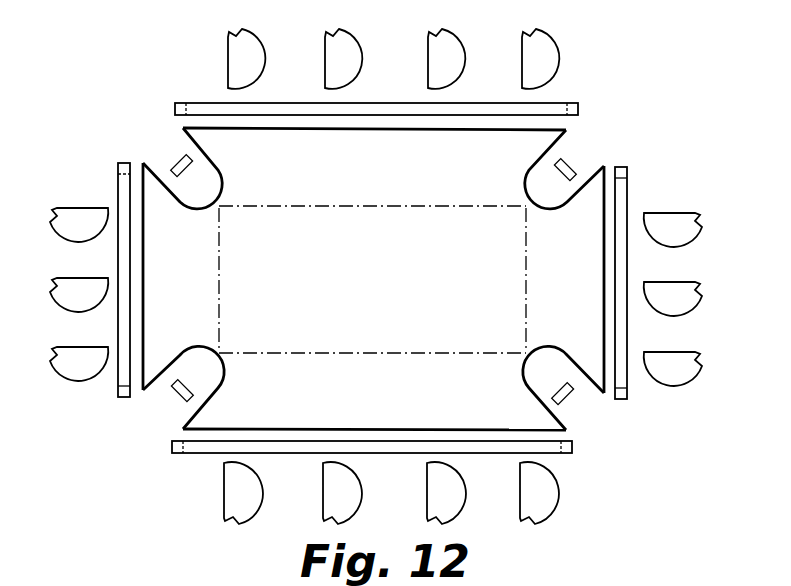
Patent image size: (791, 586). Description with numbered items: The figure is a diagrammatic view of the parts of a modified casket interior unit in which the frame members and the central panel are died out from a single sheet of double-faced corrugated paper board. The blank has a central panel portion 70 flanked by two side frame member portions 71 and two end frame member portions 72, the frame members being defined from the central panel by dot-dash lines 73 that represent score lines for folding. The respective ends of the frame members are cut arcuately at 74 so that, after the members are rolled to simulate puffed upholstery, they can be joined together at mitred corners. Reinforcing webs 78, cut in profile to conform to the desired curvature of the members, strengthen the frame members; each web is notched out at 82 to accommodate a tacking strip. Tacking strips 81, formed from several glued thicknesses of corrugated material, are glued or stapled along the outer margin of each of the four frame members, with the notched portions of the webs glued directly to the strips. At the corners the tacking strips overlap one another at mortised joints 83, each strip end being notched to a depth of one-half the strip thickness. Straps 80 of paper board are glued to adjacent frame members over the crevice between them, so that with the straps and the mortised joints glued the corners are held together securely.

The central panel portion 70 is at (360, 277).
The side frame member portions 71 is at (374, 279).
The end frame member portions 72 is at (373, 278).
The dot-dash lines 73 is at (478, 208).
The arcuately cut ends 74 is at (162, 172).
The reinforcing webs 78 is at (445, 60).
The straps 80 is at (180, 165).
The tacking strips 81 is at (396, 103).
The notches 82 is at (523, 34).
The mortised joint 83 is at (629, 172).